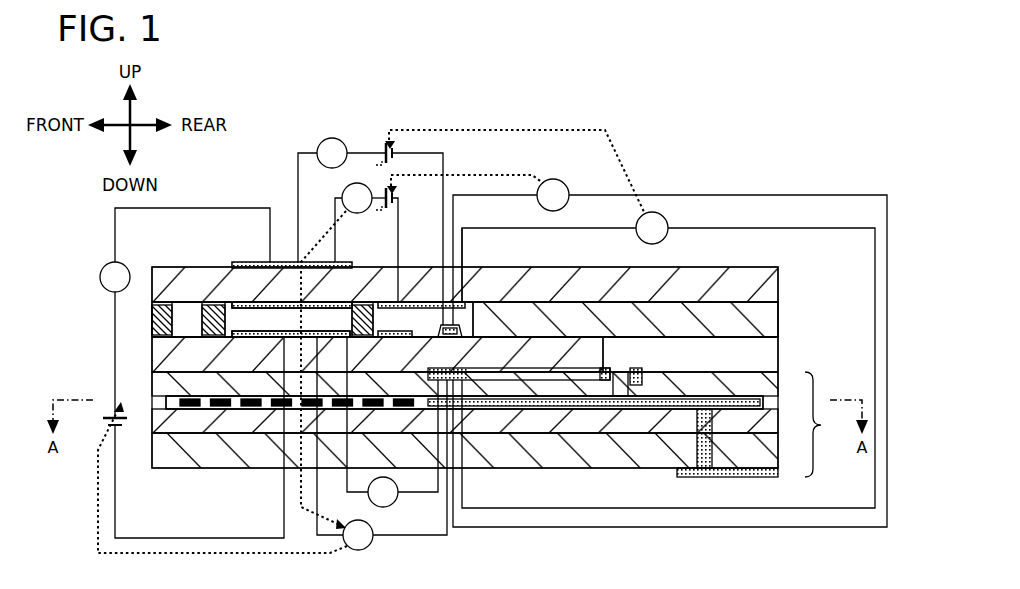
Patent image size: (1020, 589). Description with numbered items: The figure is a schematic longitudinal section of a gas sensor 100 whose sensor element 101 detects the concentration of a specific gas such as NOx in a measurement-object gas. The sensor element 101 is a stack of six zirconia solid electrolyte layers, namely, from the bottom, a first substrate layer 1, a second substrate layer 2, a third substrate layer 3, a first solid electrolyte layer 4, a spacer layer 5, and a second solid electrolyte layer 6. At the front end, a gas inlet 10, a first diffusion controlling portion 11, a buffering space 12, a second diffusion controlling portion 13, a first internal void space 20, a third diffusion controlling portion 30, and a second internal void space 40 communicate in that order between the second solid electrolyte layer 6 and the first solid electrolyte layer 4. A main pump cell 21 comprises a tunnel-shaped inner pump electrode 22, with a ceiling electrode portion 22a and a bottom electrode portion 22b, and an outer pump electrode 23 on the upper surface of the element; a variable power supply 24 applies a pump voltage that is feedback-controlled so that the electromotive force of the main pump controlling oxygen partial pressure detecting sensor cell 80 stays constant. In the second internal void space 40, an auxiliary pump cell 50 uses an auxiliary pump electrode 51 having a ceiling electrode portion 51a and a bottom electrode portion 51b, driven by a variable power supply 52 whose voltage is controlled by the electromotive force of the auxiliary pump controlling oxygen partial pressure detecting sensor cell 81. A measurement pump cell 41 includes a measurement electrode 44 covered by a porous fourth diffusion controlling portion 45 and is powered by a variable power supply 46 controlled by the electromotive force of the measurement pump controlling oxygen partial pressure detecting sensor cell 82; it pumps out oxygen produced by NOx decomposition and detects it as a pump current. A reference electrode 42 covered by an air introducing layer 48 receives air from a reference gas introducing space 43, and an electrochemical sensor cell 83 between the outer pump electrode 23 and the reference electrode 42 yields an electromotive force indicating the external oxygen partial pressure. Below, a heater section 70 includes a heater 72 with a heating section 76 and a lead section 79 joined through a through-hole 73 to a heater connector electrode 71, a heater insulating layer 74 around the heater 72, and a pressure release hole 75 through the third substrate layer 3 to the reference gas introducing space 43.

The gas sensor 100 is at (720, 124).
The sensor element 101 is at (170, 244).
The first substrate layer 1 is at (781, 448).
The second substrate layer 2 is at (781, 420).
The third substrate layer 3 is at (781, 387).
The first solid electrolyte layer 4 is at (152, 353).
The spacer layer 5 is at (781, 307).
The second solid electrolyte layer 6 is at (781, 284).
The gas inlet 10 is at (152, 322).
The first diffusion controlling portion 11 is at (168, 300).
The buffering space 12 is at (197, 312).
The second diffusion controlling portion 13 is at (217, 305).
The first internal void space 20 is at (326, 322).
The main pump cell 21 is at (183, 208).
The inner pump electrode 22 is at (283, 300).
The ceiling electrode portion 22a is at (315, 300).
The bottom electrode portion 22b is at (272, 334).
The outer pump electrode 23 is at (240, 262).
The variable power supply 24 is at (104, 421).
The third diffusion controlling portion 30 is at (360, 304).
The second internal void space 40 is at (368, 318).
The measurement pump cell 41 is at (318, 141).
The reference electrode 42 is at (466, 370).
The reference gas introducing space 43 is at (772, 358).
The measurement electrode 44 is at (455, 336).
The fourth diffusion controlling portion 45 is at (440, 327).
The variable power supply 46 is at (390, 143).
The air introducing layer 48 is at (606, 370).
The auxiliary pump cell 50 is at (343, 189).
The auxiliary pump electrode 51 is at (416, 300).
The ceiling electrode portion 51a is at (461, 295).
The bottom electrode portion 51b is at (388, 337).
The variable power supply 52 is at (391, 206).
The heater section 70 is at (825, 424).
The heater connector electrode 71 is at (774, 477).
The heater 72 is at (247, 511).
The through-hole 73 is at (706, 468).
The heater insulating layer 74 is at (176, 412).
The pressure release hole 75 is at (622, 372).
The heating section 76 is at (251, 410).
The lead section 79 is at (583, 410).
The main pump controlling oxygen partial pressure detecting sensor cell 80 is at (382, 548).
The auxiliary pump controlling oxygen partial pressure detecting sensor cell 81 is at (698, 194).
The measurement pump controlling oxygen partial pressure detecting sensor cell 82 is at (692, 227).
The electrochemical sensor cell 83 is at (405, 502).